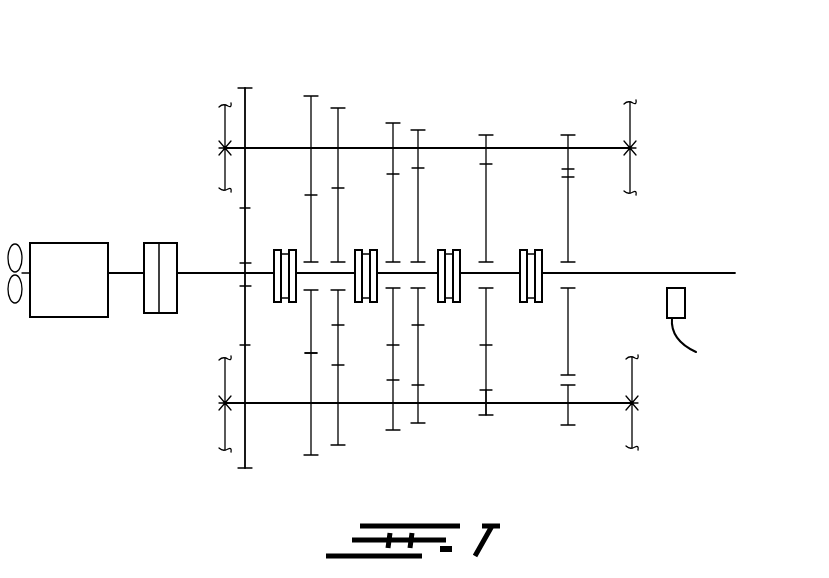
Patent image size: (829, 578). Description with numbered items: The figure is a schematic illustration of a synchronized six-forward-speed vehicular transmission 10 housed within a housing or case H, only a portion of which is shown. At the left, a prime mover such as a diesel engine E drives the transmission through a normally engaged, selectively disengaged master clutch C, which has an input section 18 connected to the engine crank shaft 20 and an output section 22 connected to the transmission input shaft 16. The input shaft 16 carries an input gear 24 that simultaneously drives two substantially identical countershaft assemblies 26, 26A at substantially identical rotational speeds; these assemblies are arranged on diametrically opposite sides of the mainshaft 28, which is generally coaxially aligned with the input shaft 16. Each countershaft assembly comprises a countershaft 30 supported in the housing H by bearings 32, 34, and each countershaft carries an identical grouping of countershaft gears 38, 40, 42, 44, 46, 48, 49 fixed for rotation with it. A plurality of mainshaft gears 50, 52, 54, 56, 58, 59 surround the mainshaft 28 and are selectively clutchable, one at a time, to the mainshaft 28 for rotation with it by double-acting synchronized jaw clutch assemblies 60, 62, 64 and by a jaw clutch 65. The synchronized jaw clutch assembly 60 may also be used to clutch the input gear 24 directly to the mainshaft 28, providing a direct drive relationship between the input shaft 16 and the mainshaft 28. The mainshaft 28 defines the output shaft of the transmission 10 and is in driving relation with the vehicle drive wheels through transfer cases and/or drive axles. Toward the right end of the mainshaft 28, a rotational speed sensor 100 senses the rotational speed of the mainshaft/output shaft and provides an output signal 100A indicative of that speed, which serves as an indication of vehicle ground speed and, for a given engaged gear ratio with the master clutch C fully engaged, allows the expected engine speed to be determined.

The transmission 10 is at (346, 121).
The diesel engine E is at (58, 280).
The master clutch C is at (157, 236).
The housing H is at (222, 124).
The input shaft 16 is at (212, 273).
The input section 18 is at (152, 313).
The engine crank shaft 20 is at (123, 271).
The output section 22 is at (180, 308).
The input gear 24 is at (247, 232).
The countershaft assembly 26 is at (264, 128).
The countershaft assembly 26A is at (288, 405).
The mainshaft 28 is at (623, 274).
The countershaft 30 is at (283, 150).
The bearing 32 is at (224, 404).
The bearing 34 is at (634, 148).
The countershaft gear 38 is at (250, 457).
The countershaft gear 40 is at (316, 447).
The countershaft gear 42 is at (340, 430).
The countershaft gear 44 is at (414, 427).
The countershaft gear 46 is at (428, 416).
The countershaft gear 48 is at (492, 413).
The countershaft gear 49 is at (570, 416).
The mainshaft gear 50 is at (308, 352).
The mainshaft gear 52 is at (342, 326).
The mainshaft gear 54 is at (392, 347).
The mainshaft gear 56 is at (421, 326).
The mainshaft gear 58 is at (484, 344).
The mainshaft gear 59 is at (570, 216).
The synchronized jaw clutch assembly 60 is at (276, 288).
The synchronized jaw clutch assembly 62 is at (380, 250).
The synchronized jaw clutch assembly 64 is at (442, 250).
The jaw clutch 65 is at (512, 250).
The rotational speed sensor 100 is at (685, 300).
The output signal 100A is at (696, 352).